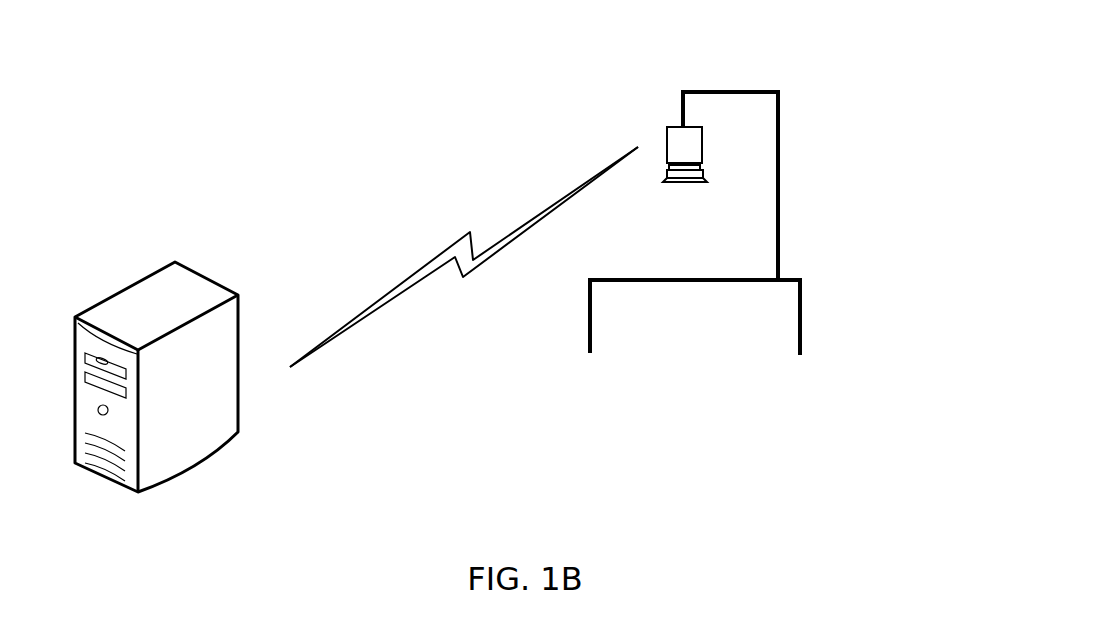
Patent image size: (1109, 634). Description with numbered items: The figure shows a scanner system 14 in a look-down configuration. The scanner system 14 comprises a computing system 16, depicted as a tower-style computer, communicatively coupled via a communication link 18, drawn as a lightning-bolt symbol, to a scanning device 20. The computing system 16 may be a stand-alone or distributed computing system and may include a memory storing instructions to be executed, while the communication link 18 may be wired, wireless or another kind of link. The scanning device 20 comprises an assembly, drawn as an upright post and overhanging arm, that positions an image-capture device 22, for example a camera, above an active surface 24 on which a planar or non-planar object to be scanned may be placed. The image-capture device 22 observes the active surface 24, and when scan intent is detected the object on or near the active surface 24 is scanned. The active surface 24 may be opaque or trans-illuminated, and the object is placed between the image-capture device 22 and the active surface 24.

The scanner system 14 is at (838, 47).
The computing system 16 is at (244, 447).
The communication link 18 is at (377, 283).
The scanning device 20 is at (793, 104).
The image-capture device 22 is at (653, 125).
The active surface 24 is at (639, 268).